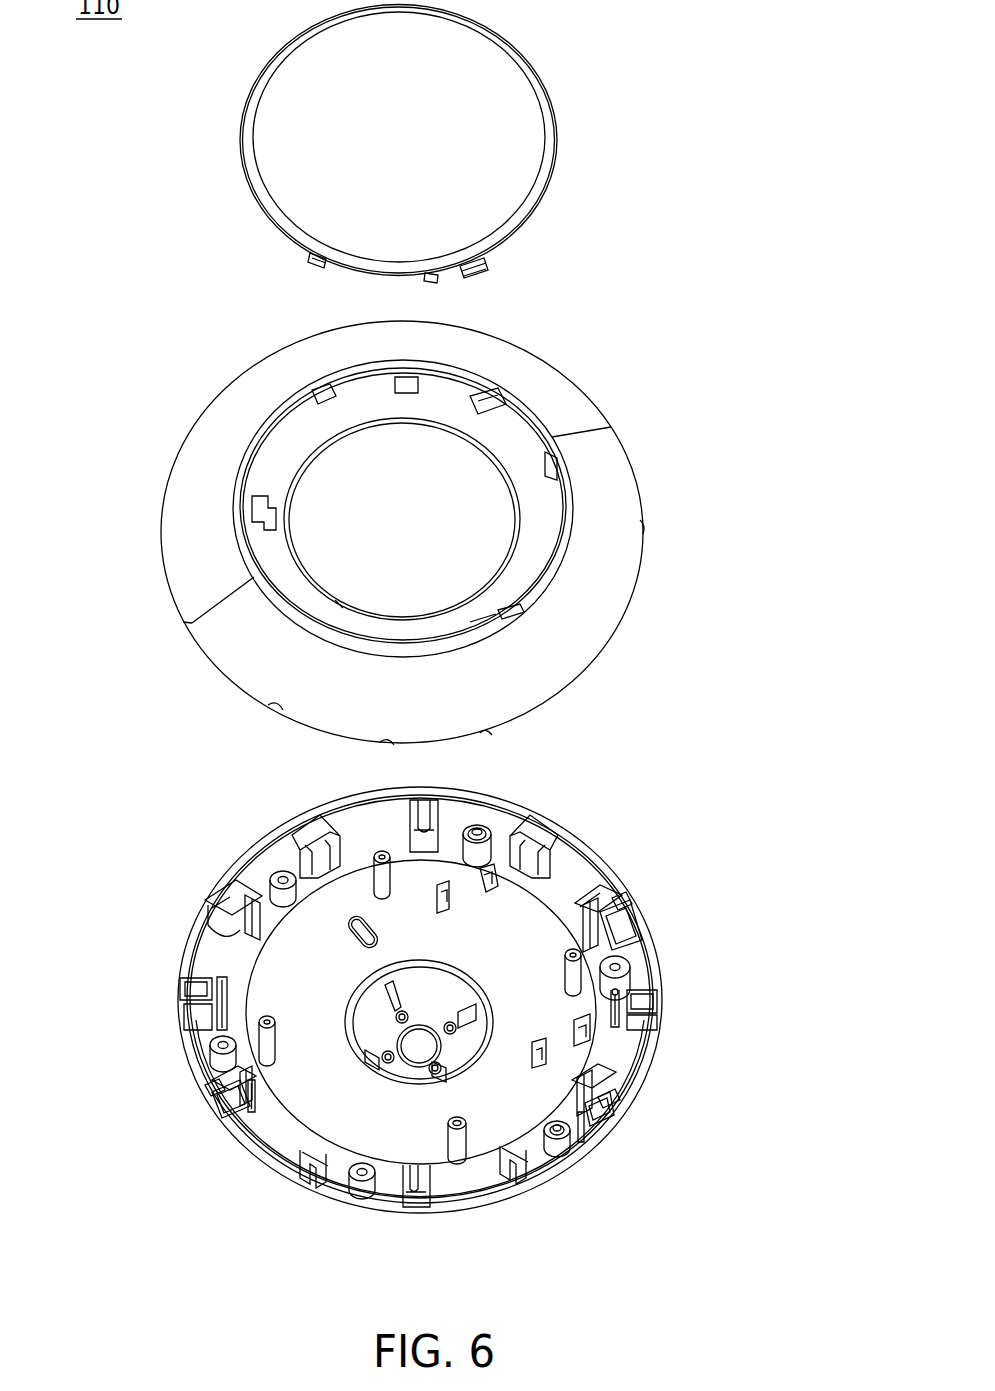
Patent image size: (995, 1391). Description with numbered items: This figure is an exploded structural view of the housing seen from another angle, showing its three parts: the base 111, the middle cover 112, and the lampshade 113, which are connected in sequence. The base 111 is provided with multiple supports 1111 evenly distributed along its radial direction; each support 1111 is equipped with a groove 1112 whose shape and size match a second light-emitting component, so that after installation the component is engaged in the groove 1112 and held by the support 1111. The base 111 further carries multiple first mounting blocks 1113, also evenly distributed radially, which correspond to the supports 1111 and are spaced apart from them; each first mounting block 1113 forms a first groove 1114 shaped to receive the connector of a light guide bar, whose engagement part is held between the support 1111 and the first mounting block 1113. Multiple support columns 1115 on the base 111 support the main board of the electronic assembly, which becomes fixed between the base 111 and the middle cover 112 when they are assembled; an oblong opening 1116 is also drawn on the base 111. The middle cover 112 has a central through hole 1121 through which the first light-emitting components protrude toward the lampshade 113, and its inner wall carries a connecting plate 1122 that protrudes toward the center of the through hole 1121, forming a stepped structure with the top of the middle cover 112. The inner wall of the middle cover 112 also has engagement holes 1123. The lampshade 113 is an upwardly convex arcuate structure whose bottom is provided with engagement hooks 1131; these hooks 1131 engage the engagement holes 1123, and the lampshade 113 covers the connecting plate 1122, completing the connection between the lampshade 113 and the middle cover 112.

The base 111 is at (187, 913).
The support 1111 is at (640, 957).
The groove 1112 is at (600, 895).
The first mounting block 1113 is at (613, 927).
The first groove 1114 is at (623, 908).
The support column 1115 is at (380, 857).
The oblong hole 1116 is at (350, 922).
The middle cover 112 is at (253, 402).
The through hole 1121 is at (447, 516).
The connecting plate 1122 is at (523, 558).
The engagement hole 1123 is at (478, 405).
The lampshade 113 is at (343, 148).
The engagement hook 1131 is at (490, 270).